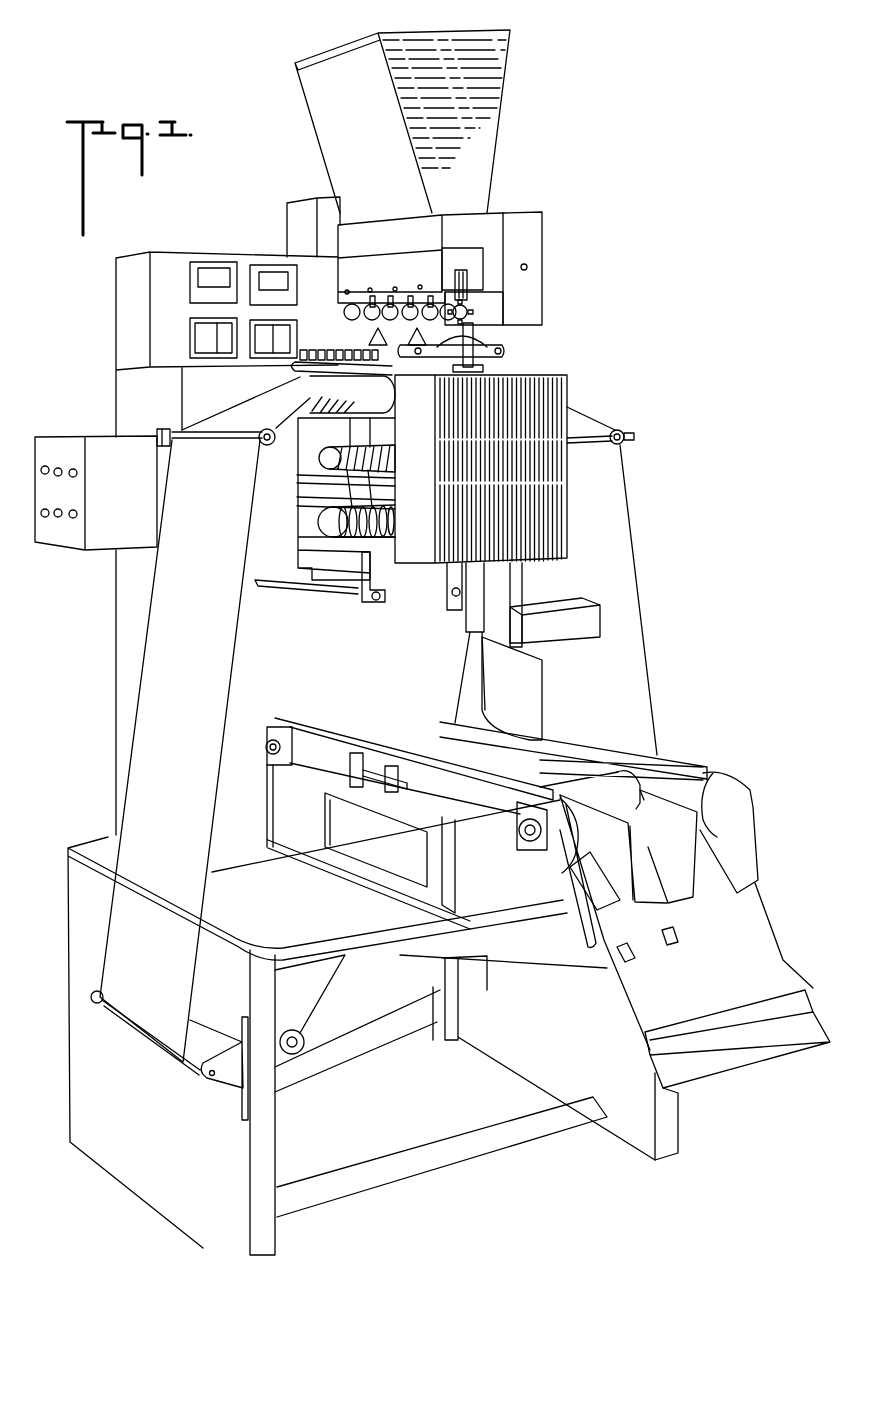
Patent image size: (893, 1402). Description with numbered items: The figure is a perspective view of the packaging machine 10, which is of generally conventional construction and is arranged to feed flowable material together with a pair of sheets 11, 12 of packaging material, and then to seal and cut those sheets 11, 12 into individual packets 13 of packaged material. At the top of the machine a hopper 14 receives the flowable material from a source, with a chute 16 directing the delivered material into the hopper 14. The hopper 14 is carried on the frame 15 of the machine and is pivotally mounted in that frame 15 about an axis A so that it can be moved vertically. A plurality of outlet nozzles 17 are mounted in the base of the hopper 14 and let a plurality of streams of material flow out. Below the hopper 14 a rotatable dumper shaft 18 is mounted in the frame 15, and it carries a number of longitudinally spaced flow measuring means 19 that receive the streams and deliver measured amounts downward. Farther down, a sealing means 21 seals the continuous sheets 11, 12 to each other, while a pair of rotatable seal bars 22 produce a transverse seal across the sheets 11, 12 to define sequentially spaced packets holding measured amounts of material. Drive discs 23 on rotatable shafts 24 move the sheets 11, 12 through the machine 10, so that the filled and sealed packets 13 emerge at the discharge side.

The packaging machine 10 is at (596, 197).
The sheet 11 is at (142, 775).
The sheet 12 is at (630, 634).
The packets 13 is at (636, 961).
The hopper 14 is at (343, 282).
The frame 15 is at (535, 295).
The chute 16 is at (487, 152).
The outlet nozzles 17 is at (400, 293).
The dumper shaft 18 is at (472, 312).
The flow measuring means 19 is at (347, 327).
The sealing means 21 is at (392, 410).
The rotatable seal bars 22 is at (380, 463).
The discs 23 is at (390, 525).
The rotatable shafts 24 is at (388, 513).
The axis A is at (535, 267).